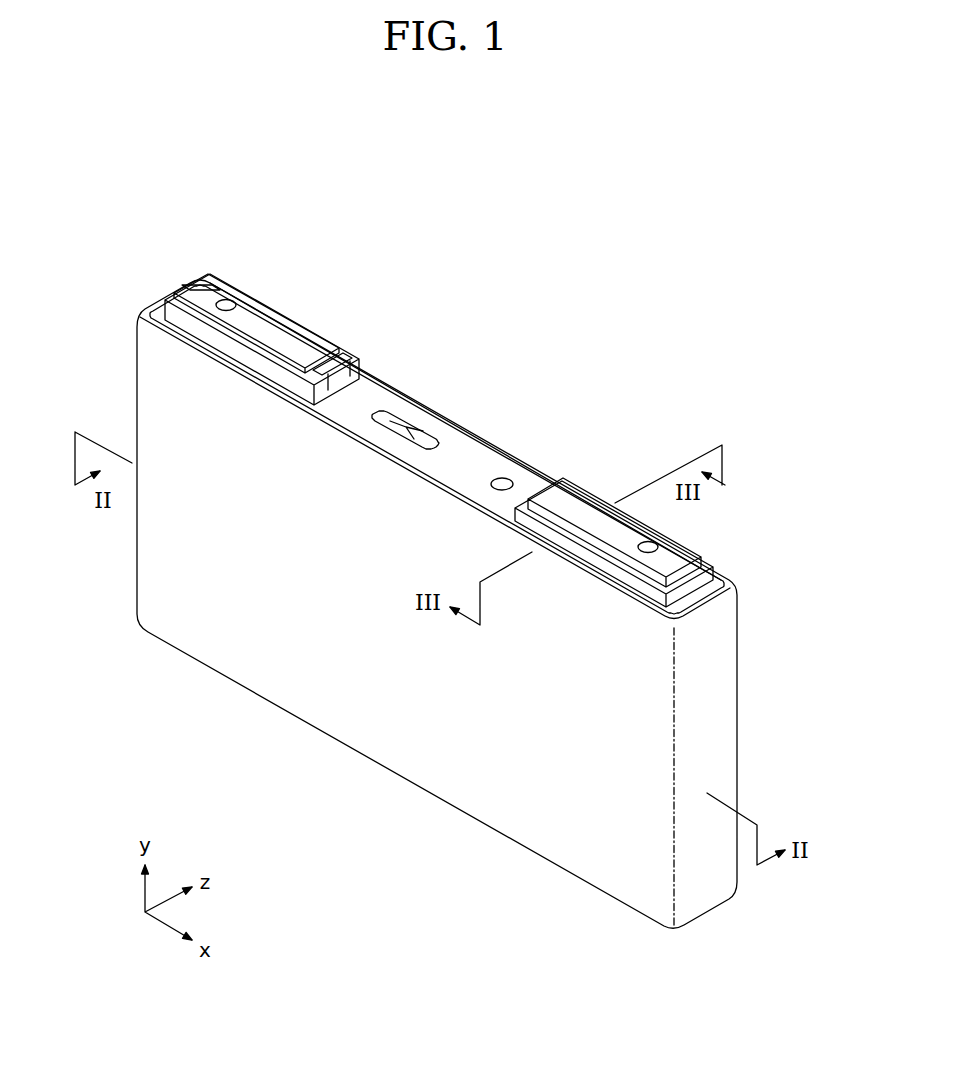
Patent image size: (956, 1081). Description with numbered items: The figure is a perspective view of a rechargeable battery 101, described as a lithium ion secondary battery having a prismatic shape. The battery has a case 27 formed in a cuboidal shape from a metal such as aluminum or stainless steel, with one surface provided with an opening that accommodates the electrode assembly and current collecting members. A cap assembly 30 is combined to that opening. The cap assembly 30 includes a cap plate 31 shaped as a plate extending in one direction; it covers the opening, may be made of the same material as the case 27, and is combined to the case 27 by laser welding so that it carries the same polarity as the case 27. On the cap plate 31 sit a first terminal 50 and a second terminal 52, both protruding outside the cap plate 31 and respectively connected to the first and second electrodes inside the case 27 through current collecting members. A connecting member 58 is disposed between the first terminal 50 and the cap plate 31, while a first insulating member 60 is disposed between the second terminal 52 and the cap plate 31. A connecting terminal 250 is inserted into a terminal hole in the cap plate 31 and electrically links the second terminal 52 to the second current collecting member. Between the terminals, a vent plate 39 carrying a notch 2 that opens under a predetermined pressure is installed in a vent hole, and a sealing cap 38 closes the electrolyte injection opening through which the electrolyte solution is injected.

The rechargeable battery 101 is at (466, 225).
The case 27 is at (341, 720).
The cap assembly 30 is at (482, 437).
The cap plate 31 is at (376, 393).
The vent plate 39 is at (400, 415).
The notch 2 is at (415, 432).
The sealing cap 38 is at (503, 480).
The first terminal 50 is at (597, 505).
The second terminal 52 is at (262, 322).
The connecting member 58 is at (687, 588).
The first insulating member 60 is at (323, 338).
The connecting terminal 250 is at (227, 300).